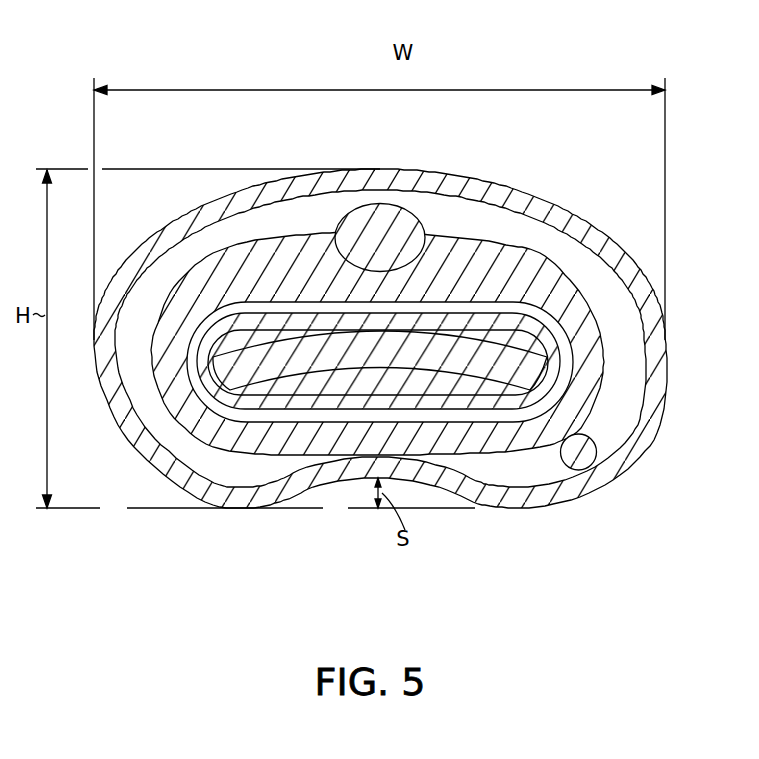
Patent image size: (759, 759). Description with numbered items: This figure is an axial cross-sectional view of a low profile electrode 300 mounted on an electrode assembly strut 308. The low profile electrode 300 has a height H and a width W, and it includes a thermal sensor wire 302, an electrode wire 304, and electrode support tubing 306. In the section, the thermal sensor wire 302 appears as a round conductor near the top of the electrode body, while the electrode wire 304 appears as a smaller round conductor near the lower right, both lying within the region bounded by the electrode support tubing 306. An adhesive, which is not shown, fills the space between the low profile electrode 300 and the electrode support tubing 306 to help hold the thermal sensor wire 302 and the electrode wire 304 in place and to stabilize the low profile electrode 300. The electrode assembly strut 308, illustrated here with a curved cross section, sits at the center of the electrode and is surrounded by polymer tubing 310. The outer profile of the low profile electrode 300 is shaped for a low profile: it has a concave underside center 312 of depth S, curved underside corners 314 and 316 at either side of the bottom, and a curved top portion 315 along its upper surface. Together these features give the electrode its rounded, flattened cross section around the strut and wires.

The low profile electrode 300 is at (479, 184).
The thermal sensor wire 302 is at (393, 216).
The electrode wire 304 is at (598, 438).
The electrode support tubing 306 is at (515, 238).
The electrode assembly strut 308 is at (523, 367).
The polymer tubing 310 is at (547, 338).
The concave underside center 312 is at (344, 494).
The curved underside corner 314 is at (606, 496).
The curved top portion 315 is at (586, 198).
The curved underside corner 316 is at (127, 480).